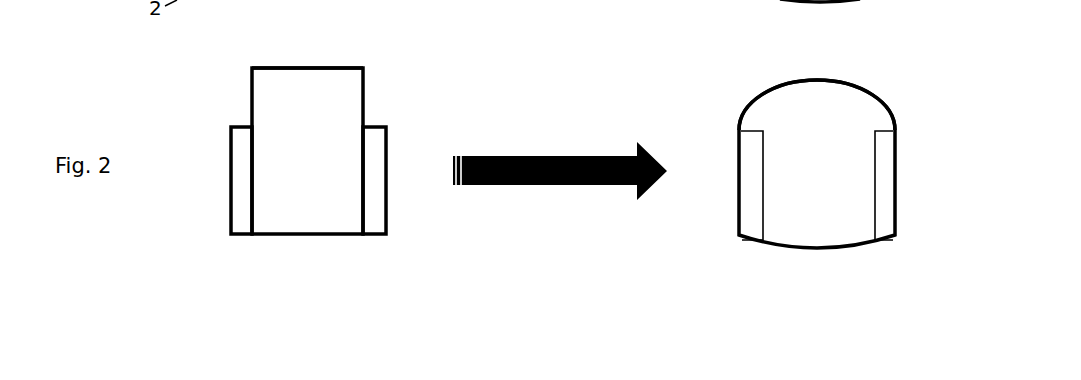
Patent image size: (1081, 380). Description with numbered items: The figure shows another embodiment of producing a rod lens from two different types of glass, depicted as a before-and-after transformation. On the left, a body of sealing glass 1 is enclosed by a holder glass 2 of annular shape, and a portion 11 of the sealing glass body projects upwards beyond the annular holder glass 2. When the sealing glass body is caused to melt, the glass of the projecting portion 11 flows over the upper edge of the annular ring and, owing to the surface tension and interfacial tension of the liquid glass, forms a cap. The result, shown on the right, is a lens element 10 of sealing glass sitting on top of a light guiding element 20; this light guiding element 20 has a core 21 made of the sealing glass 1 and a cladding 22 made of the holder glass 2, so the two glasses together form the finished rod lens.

The sealing glass 1 is at (296, 198).
The portion 11 is at (332, 93).
The holder glass 2 is at (370, 208).
The lens element 10 is at (815, 108).
The light guiding element 20 is at (917, 171).
The core 21 is at (815, 167).
The cladding 22 is at (883, 200).